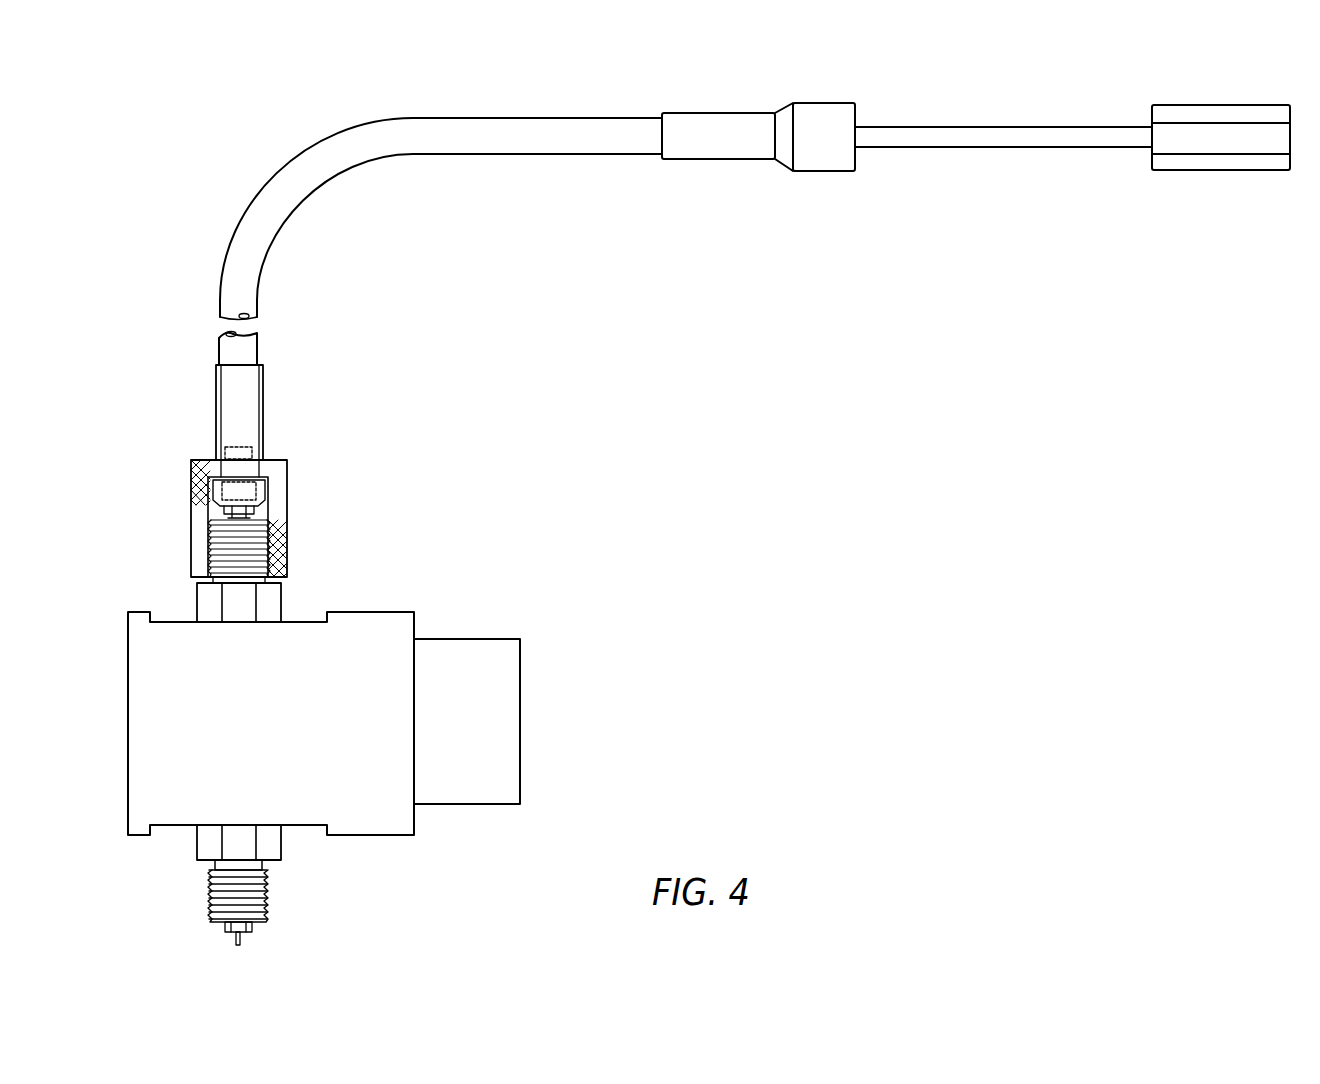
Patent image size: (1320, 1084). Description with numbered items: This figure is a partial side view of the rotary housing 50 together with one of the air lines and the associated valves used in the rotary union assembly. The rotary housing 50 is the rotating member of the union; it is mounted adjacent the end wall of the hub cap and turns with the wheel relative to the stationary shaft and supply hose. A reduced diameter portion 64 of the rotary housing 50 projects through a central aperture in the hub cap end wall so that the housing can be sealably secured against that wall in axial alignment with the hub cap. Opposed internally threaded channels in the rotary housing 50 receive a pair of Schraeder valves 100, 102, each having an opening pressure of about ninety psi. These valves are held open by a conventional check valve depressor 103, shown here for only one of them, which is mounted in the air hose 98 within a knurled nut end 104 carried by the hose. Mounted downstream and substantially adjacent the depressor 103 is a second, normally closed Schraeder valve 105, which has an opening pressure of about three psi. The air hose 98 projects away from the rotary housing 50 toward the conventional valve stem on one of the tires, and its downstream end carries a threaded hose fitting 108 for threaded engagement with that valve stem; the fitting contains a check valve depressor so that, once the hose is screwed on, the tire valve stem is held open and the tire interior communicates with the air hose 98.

The air hose 98 is at (414, 118).
The threaded hose fitting 108 is at (1222, 105).
The Schraeder valve 105 is at (262, 460).
The knurled nut end 104 is at (287, 559).
The check valve depressor 103 is at (262, 507).
The Schraeder valve 102 is at (210, 545).
The rotary housing 50 is at (370, 612).
The reduced diameter portion 64 is at (475, 639).
The Schraeder valve 100 is at (268, 921).